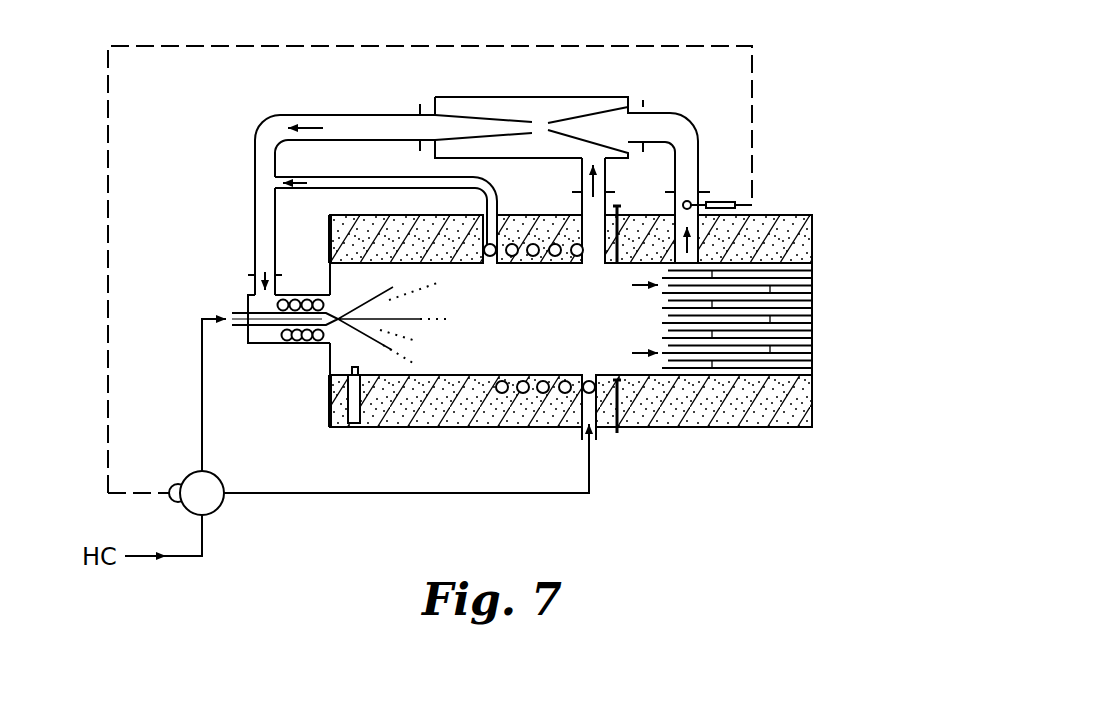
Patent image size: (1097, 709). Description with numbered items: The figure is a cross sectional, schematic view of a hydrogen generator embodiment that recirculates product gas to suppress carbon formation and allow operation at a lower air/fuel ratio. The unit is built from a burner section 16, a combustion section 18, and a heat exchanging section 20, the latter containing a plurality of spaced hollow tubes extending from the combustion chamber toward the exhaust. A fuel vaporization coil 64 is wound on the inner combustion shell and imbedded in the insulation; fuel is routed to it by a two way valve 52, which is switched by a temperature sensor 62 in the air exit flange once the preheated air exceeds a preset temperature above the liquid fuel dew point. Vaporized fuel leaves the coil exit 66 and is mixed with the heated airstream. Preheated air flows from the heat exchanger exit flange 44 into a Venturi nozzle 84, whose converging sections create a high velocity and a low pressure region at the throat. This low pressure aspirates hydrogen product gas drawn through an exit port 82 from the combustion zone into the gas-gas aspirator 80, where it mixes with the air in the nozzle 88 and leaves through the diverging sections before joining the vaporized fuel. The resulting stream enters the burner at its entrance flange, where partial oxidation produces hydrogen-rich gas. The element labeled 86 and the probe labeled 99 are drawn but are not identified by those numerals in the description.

The burner section 16 is at (300, 294).
The combustion section 18 is at (426, 217).
The heat exchanging section 20 is at (767, 215).
The air exit flange 44 is at (702, 195).
The two way valve 52 is at (212, 472).
The temperature sensor 62 is at (698, 195).
The fuel vaporization coil 64 is at (542, 382).
The coil exit 66 is at (423, 177).
The gas-gas aspirator 80 is at (566, 119).
The exit port 82 is at (583, 212).
The Venturi nozzle 84 is at (584, 112).
The nozzle 86 is at (535, 140).
The nozzle 88 is at (473, 86).
The igniter probe 99 is at (354, 411).